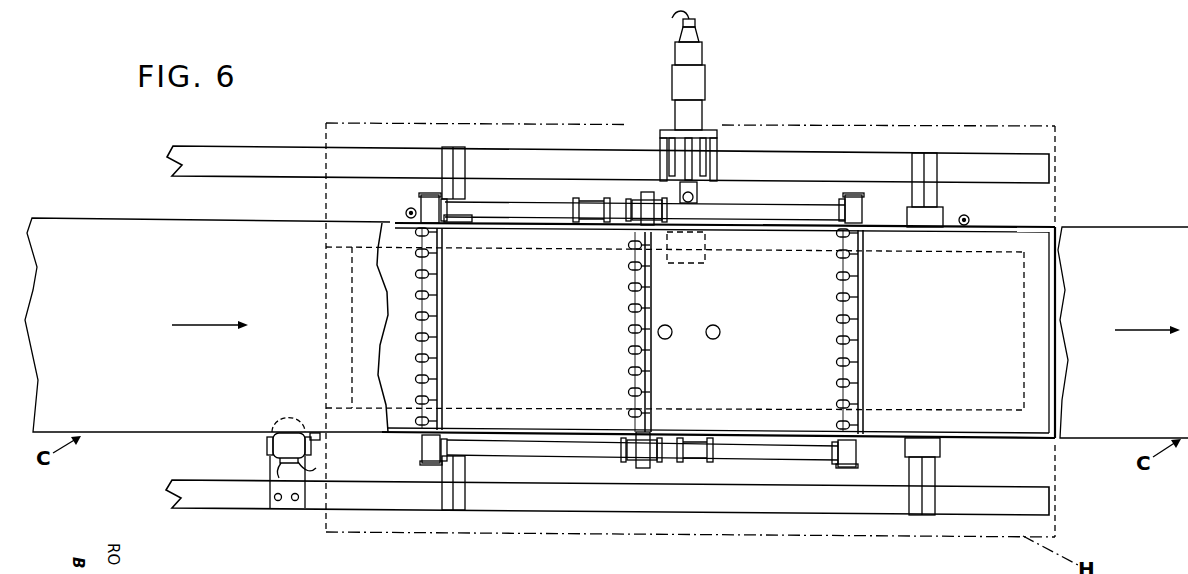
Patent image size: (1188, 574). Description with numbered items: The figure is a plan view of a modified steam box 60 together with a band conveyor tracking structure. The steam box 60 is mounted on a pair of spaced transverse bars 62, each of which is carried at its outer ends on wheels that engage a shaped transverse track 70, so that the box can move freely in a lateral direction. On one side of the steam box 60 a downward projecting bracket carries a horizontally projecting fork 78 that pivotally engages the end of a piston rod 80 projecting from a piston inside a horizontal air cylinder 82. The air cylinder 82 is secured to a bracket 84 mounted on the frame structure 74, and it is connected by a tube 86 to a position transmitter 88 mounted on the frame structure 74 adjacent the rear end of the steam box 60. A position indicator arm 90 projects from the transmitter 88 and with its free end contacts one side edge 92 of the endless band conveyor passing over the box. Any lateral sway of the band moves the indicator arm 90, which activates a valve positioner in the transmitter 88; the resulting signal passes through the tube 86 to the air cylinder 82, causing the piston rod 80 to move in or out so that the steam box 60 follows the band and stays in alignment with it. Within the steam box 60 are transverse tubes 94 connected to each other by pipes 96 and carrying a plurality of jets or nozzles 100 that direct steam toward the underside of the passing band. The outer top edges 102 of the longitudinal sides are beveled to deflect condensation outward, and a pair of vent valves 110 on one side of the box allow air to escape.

The steam box 60 is at (1065, 216).
The transverse bar 62 is at (458, 220).
The transverse track 70 is at (458, 488).
The frame structure 74 is at (250, 151).
The fork 78 is at (698, 197).
The piston rod 80 is at (686, 158).
The air cylinder 82 is at (702, 77).
The bracket 84 is at (665, 128).
The tube 86 is at (663, 20).
The position transmitter 88 is at (277, 447).
The position indicator arm 90 is at (323, 440).
The side edge 92 is at (165, 435).
The transverse tube 94 is at (430, 370).
The pipe 96 is at (535, 200).
The jet or nozzle 100 is at (417, 341).
The outer top edge 102 is at (1002, 228).
The vent valve 110 is at (406, 210).